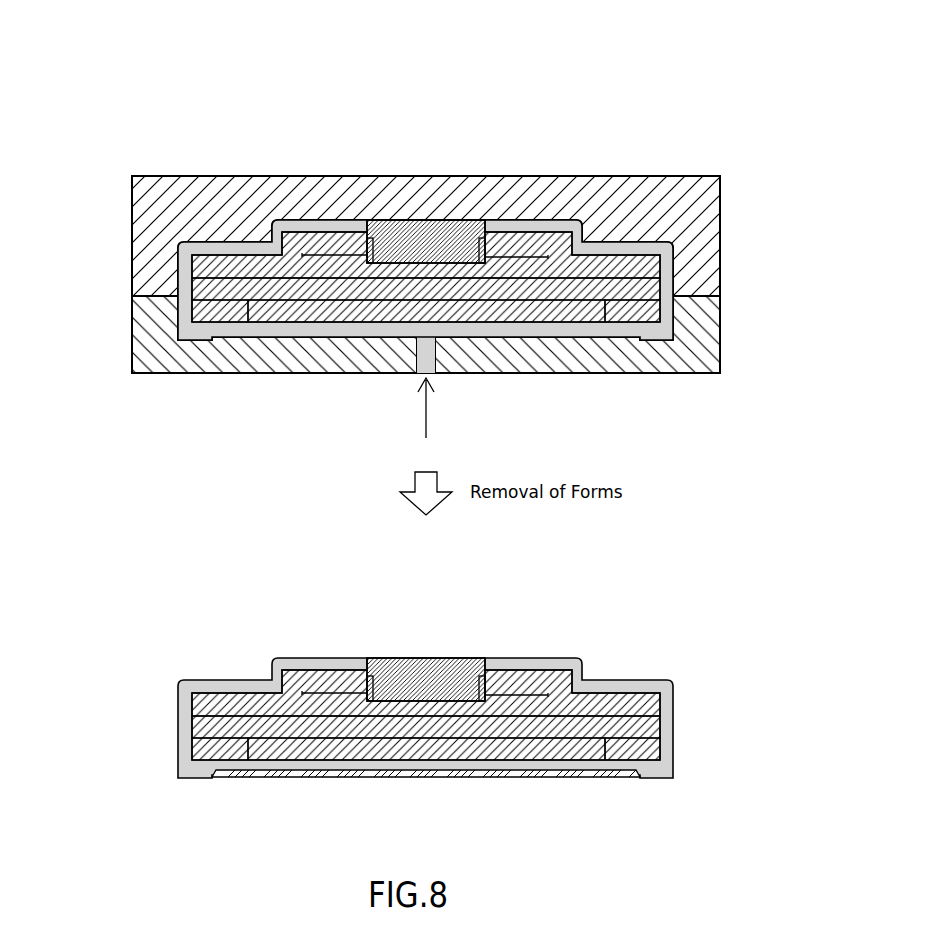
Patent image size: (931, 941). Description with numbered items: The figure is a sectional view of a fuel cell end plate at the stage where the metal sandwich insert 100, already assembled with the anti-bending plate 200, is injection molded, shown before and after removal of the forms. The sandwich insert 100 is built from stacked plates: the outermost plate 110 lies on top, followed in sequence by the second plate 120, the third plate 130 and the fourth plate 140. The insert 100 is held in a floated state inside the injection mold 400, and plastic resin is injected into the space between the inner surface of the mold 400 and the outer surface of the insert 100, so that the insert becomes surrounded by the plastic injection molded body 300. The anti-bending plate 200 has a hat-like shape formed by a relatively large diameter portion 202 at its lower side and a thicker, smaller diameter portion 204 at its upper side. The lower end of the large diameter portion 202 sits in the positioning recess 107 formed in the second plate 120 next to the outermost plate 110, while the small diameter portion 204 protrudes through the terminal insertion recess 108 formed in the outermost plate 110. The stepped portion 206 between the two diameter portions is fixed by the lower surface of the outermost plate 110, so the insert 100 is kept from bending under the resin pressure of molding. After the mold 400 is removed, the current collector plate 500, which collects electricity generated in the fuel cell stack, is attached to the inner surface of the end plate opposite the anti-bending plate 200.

The sandwich insert 100 is at (515, 485).
The outermost plate 110 is at (585, 228).
The second plate 120 is at (648, 262).
The third plate 130 is at (648, 285).
The fourth plate 140 is at (648, 310).
The positioning recess 107 is at (490, 270).
The terminal insertion recess 108 is at (336, 238).
The anti-bending plate 200 is at (426, 398).
The large diameter portion 202 is at (492, 240).
The small diameter portion 204 is at (401, 220).
The stepped portion 206 is at (370, 254).
The plastic injection molded body 300 is at (188, 315).
The injection mold 400 is at (233, 176).
The current collector plate 500 is at (547, 777).